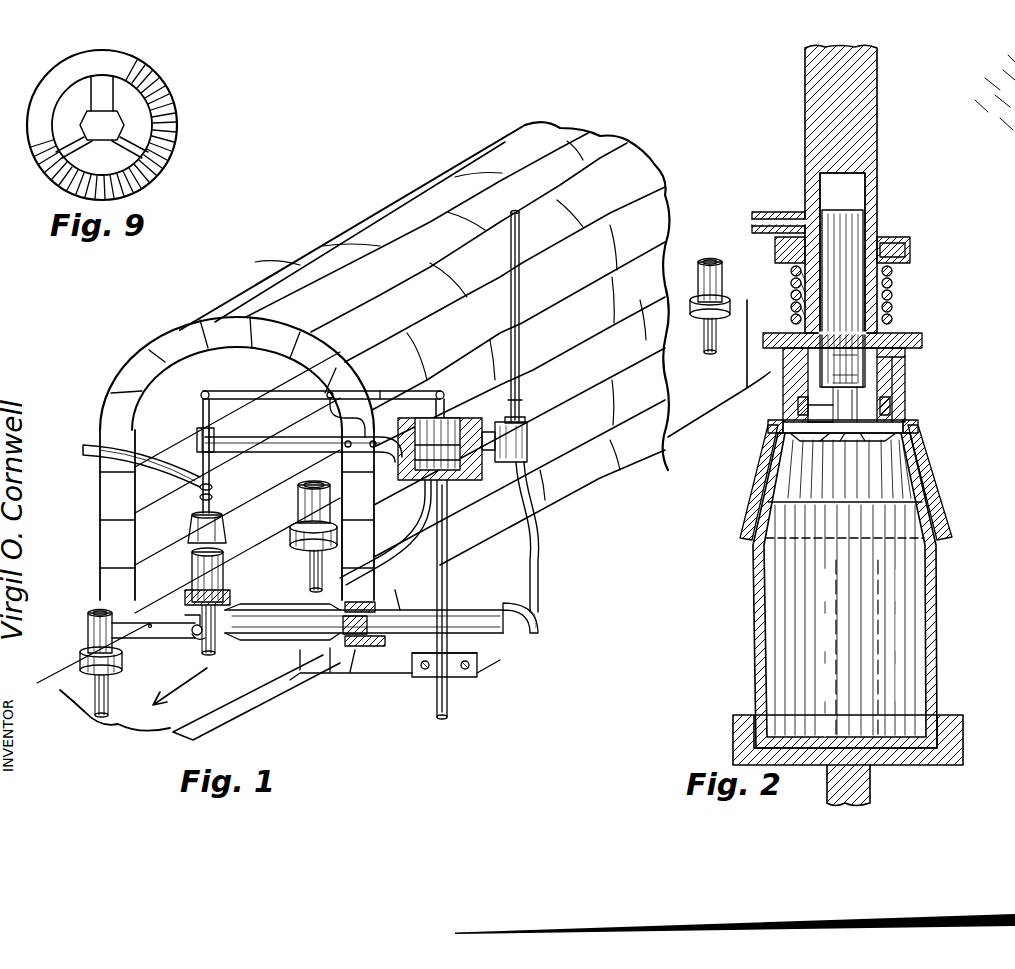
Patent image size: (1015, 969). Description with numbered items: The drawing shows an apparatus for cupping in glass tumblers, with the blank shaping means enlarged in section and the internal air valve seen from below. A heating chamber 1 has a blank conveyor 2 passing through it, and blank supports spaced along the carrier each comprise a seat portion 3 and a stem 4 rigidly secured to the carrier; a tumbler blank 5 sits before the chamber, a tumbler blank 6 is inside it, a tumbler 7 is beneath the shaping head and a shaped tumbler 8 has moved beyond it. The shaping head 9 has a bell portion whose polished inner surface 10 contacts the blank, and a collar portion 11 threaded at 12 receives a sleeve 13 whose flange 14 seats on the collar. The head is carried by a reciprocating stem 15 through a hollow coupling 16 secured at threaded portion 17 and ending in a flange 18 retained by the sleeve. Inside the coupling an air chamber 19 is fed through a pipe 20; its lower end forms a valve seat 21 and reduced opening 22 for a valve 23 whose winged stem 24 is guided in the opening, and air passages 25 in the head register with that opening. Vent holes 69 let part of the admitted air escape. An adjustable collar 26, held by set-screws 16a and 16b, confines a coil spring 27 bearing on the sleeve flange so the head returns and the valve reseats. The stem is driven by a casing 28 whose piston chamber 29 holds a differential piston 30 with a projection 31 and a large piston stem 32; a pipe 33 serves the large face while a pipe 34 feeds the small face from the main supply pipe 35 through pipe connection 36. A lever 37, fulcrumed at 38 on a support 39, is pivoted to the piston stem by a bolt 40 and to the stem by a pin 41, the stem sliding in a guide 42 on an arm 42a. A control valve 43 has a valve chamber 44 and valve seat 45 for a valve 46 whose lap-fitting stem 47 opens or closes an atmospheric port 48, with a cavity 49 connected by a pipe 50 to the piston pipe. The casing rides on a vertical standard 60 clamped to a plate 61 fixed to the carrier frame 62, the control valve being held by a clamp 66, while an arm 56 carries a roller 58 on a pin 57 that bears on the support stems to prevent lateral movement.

In FIG. 1, the heating chamber 1 is at (330, 252).
In FIG. 1, the blank conveyor 2 is at (678, 412).
In FIG. 1, the seat portion 3 is at (698, 302).
In FIG. 2, the seat portion 3 is at (964, 736).
In FIG. 1, the stem 4 is at (705, 340).
In FIG. 2, the stem 4 is at (871, 790).
In FIG. 1, the tumbler blank 5 is at (698, 270).
In FIG. 1, the tumbler blank 6 is at (300, 510).
In FIG. 1, the shaped tumbler 7 is at (195, 562).
In FIG. 2, the shaped tumbler 7 is at (940, 632).
In FIG. 1, the shaped tumbler 8 is at (88, 631).
In FIG. 1, the shaping head 9 is at (190, 528).
In FIG. 2, the shaping head 9 is at (938, 487).
In FIG. 2, the inner surface 10 is at (927, 460).
In FIG. 2, the collar portion 11 is at (906, 382).
In FIG. 2, the internal threads 12 is at (906, 366).
In FIG. 2, the sleeve 13 is at (906, 358).
In FIG. 2, the flange 14 is at (900, 336).
In FIG. 1, the reciprocating stem 15 is at (201, 412).
In FIG. 2, the reciprocating stem 15 is at (866, 90).
In FIG. 2, the coupling 16 is at (878, 230).
In FIG. 2, the set-screw 16a is at (906, 254).
In FIG. 2, the set-screw 16b is at (775, 250).
In FIG. 2, the threaded portion 17 is at (866, 192).
In FIG. 2, the flange 18 is at (892, 420).
In FIG. 2, the air chamber 19 is at (858, 292).
In FIG. 1, the pipe 20 is at (88, 458).
In FIG. 2, the pipe 20 is at (776, 212).
In FIG. 2, the valve seat 21 is at (800, 400).
In FIG. 2, the reduced opening 22 is at (806, 420).
In FIG. 9, the valve 23 is at (108, 120).
In FIG. 2, the valve 23 is at (792, 330).
In FIG. 2, the winged stem 24 is at (838, 427).
In FIG. 2, the air passages 25 is at (842, 436).
In FIG. 2, the collar 26 is at (910, 240).
In FIG. 2, the coil spring 27 is at (893, 297).
In FIG. 1, the casing 28 is at (520, 482).
In FIG. 1, the piston chamber 29 is at (482, 452).
In FIG. 1, the differential piston 30 is at (370, 490).
In FIG. 1, the projection 31 is at (462, 452).
In FIG. 1, the piston stem 32 is at (522, 393).
In FIG. 1, the pipe 33 is at (432, 490).
In FIG. 1, the pipe 34 is at (527, 420).
In FIG. 1, the main supply pipe 35 is at (404, 596).
In FIG. 1, the pipe connection 36 is at (528, 448).
In FIG. 1, the lever 37 is at (382, 390).
In FIG. 1, the fulcrum 38 is at (332, 390).
In FIG. 1, the support 39 is at (380, 420).
In FIG. 1, the bolt 40 is at (446, 390).
In FIG. 1, the bolt or pin 41 is at (201, 393).
In FIG. 1, the guide 42 is at (196, 439).
In FIG. 1, the arm 42a is at (262, 445).
In FIG. 1, the control valve 43 is at (398, 652).
In FIG. 1, the valve chamber 44 is at (380, 610).
In FIG. 1, the valve seat 45 is at (350, 614).
In FIG. 1, the valve 46 is at (470, 677).
In FIG. 1, the stem 47 is at (303, 672).
In FIG. 1, the atmospheric port 48 is at (330, 673).
In FIG. 1, the cavity 49 is at (352, 675).
In FIG. 1, the pipe 50 is at (330, 612).
In FIG. 1, the arm 56 is at (150, 623).
In FIG. 1, the bolt or pin 57 is at (193, 626).
In FIG. 1, the roller 58 is at (194, 641).
In FIG. 1, the vertical standard 60 is at (468, 544).
In FIG. 1, the plate or arm 61 is at (403, 690).
In FIG. 1, the carrier frame 62 is at (245, 702).
In FIG. 1, the clamp 66 is at (472, 610).
In FIG. 2, the vent holes 69 is at (770, 432).